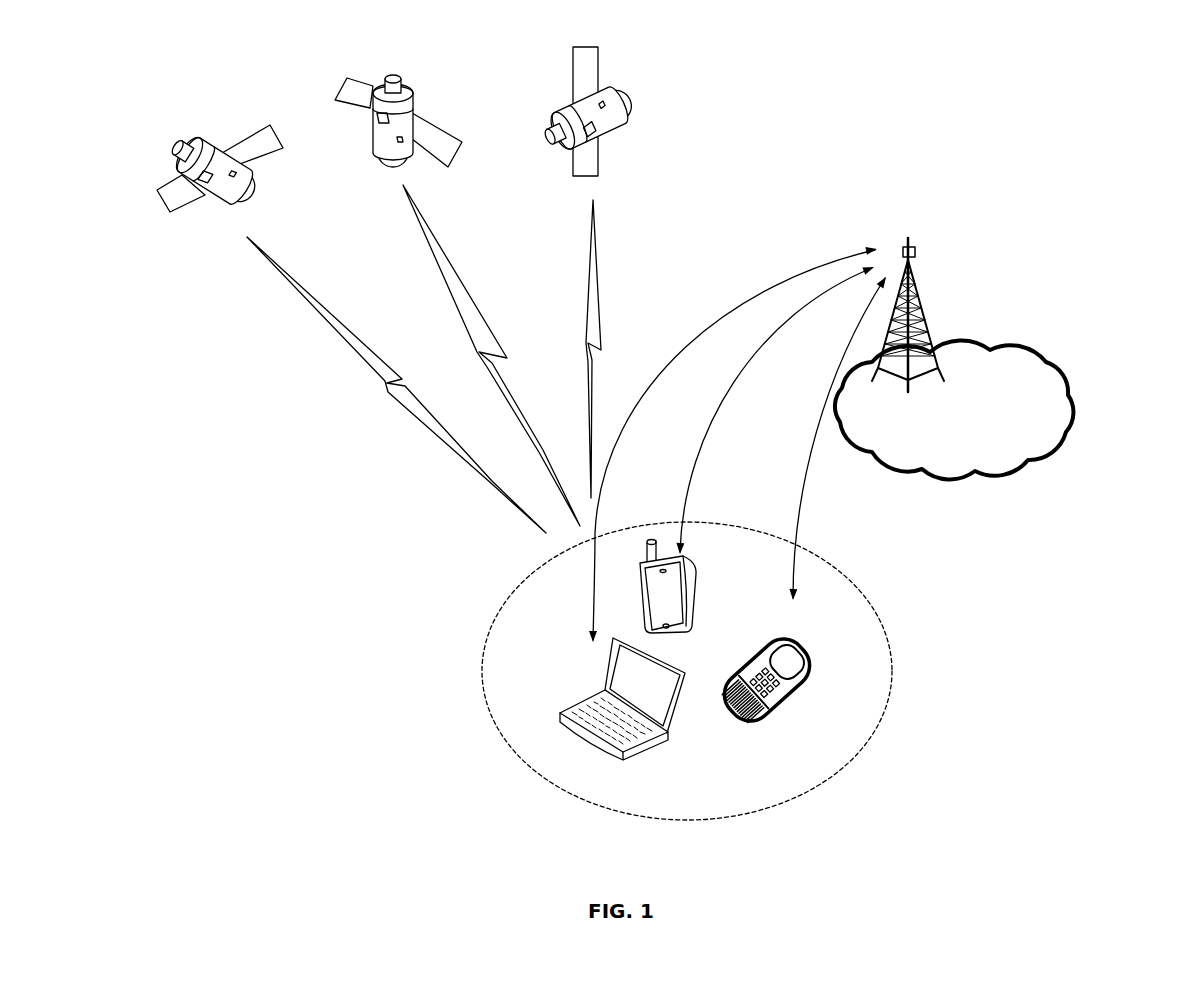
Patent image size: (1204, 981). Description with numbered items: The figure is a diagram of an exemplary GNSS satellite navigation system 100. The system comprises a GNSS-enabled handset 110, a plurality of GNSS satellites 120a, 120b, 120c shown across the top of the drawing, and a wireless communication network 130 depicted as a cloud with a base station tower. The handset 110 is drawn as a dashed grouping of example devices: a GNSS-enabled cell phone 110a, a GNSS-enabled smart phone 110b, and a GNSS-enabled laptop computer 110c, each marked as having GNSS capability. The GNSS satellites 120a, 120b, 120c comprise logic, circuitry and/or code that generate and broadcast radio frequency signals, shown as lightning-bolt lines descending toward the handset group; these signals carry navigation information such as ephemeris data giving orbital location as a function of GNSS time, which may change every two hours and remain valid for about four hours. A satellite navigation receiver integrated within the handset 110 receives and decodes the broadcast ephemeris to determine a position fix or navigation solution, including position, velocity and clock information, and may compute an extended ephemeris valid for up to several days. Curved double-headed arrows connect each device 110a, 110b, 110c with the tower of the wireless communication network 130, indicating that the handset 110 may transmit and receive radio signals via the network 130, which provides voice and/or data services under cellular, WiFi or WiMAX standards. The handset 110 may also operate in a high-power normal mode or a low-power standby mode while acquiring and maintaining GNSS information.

The GNSS satellite navigation system 100 is at (1094, 150).
The GNSS-enabled handset 110 is at (540, 582).
The cell phone 110a is at (818, 658).
The smart phone 110b is at (700, 590).
The laptop computer 110c is at (672, 666).
The GNSS satellite 120a is at (208, 146).
The GNSS satellite 120b is at (420, 82).
The GNSS satellite 120c is at (637, 92).
The wireless communication network 130 is at (1025, 356).